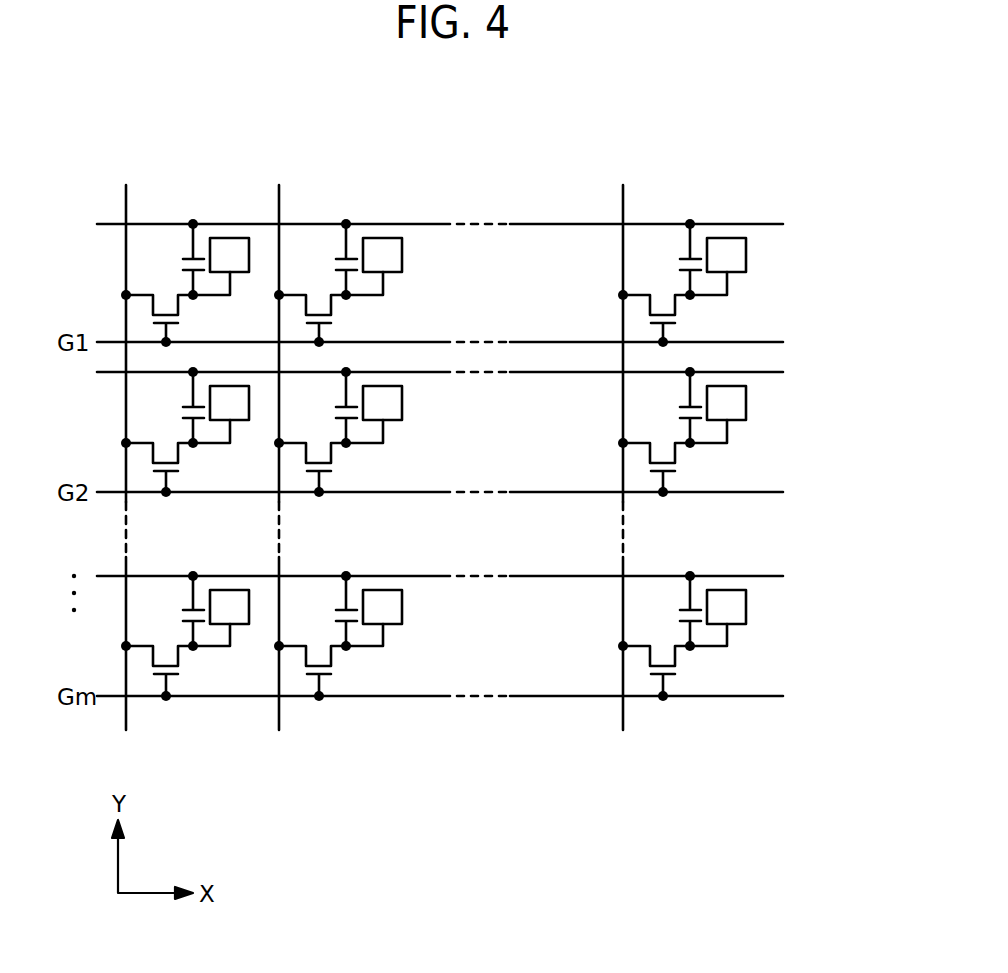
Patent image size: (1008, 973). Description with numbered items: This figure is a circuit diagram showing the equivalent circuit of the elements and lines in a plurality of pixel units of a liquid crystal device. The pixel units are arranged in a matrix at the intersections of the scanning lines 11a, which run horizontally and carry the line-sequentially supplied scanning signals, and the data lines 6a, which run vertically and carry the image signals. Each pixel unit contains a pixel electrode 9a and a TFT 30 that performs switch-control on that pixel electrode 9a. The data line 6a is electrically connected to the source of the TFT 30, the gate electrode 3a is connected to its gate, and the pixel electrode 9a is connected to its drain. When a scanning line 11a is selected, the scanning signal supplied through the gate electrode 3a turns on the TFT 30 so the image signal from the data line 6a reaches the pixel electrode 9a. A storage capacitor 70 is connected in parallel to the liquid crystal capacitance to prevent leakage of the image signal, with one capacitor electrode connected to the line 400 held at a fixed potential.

The data line 6a is at (667, 182).
The capacitor line 400 is at (813, 592).
The scanning line 11a is at (832, 696).
The storage capacitor 70 is at (180, 267).
The pixel electrode 9a is at (778, 644).
The TFT 30 is at (147, 308).
The gate electrode 3a is at (672, 678).